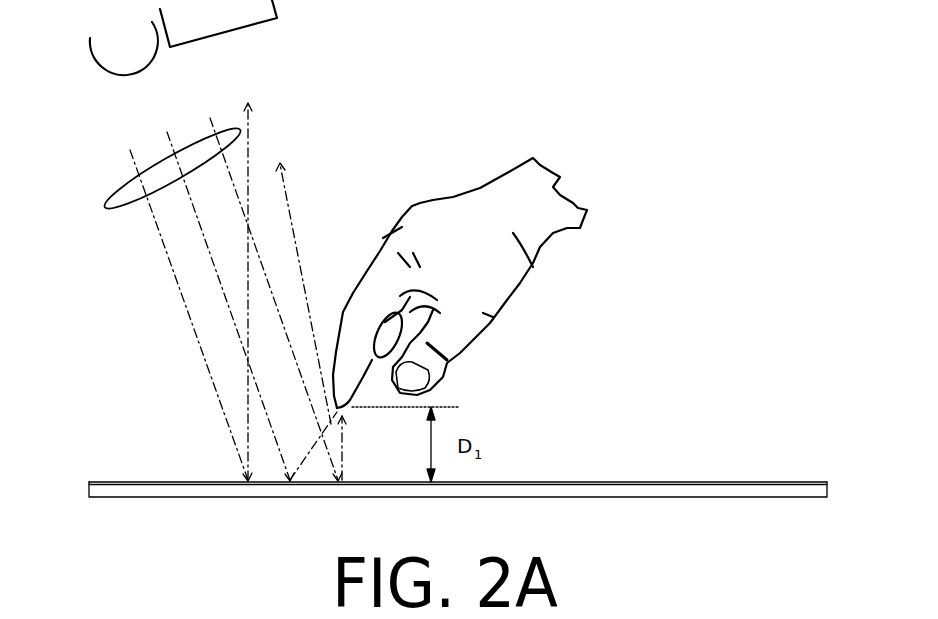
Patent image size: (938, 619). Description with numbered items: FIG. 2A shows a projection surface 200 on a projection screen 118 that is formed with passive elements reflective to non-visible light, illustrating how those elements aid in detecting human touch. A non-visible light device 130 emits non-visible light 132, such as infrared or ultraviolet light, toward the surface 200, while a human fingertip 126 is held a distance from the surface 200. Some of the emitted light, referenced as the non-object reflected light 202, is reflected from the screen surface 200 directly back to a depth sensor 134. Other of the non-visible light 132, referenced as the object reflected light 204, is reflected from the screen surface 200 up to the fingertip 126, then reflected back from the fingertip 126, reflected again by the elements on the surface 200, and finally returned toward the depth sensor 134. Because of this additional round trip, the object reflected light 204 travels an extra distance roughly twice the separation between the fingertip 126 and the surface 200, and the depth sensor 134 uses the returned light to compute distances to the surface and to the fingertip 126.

The projection screen 118 is at (603, 497).
The fingertip 126 is at (340, 398).
The non-visible light device 130 is at (115, 48).
The non-visible light 132 is at (105, 207).
The depth sensor 134 is at (247, 28).
The projection surface 200 is at (680, 482).
The non-object reflected light 202 is at (248, 118).
The object reflected light 204 is at (288, 207).